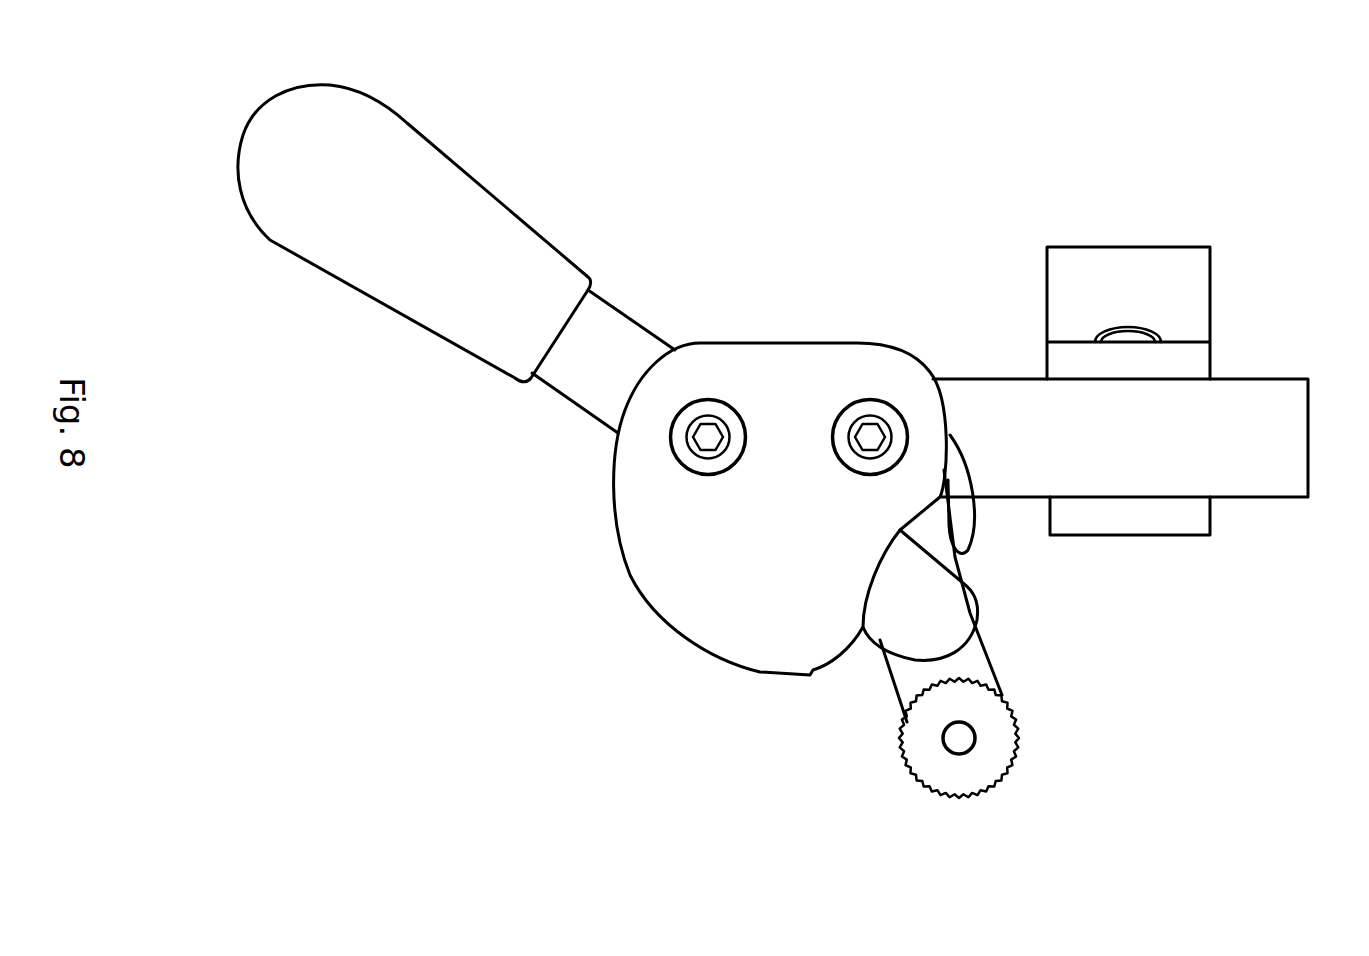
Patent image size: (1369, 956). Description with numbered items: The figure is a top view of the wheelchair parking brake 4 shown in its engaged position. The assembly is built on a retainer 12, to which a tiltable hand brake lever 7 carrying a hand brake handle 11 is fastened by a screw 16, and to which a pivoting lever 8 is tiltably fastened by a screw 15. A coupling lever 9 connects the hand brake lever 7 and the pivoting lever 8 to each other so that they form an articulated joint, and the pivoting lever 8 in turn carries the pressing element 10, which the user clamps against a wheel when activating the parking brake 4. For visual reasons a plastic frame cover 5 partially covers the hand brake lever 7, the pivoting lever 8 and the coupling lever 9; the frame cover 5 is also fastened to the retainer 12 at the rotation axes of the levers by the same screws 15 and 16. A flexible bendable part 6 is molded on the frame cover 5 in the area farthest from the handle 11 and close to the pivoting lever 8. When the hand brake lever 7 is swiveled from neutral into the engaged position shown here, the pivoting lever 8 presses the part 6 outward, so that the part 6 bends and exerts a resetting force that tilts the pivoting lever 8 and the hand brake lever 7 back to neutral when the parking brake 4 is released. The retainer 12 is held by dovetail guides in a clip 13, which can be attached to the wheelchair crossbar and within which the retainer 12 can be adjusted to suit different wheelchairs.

The parking brake 4 is at (640, 687).
The frame cover 5 is at (771, 545).
The flexible bendable part 6 is at (970, 520).
The hand brake lever 7 is at (625, 343).
The pivoting lever 8 is at (975, 657).
The coupling lever 9 is at (903, 627).
The pressing element 10 is at (997, 757).
The hand brake handle 11 is at (402, 140).
The retainer 12 is at (1272, 413).
The clip 13 is at (1197, 264).
The screw 15 is at (870, 437).
The screw 16 is at (708, 437).